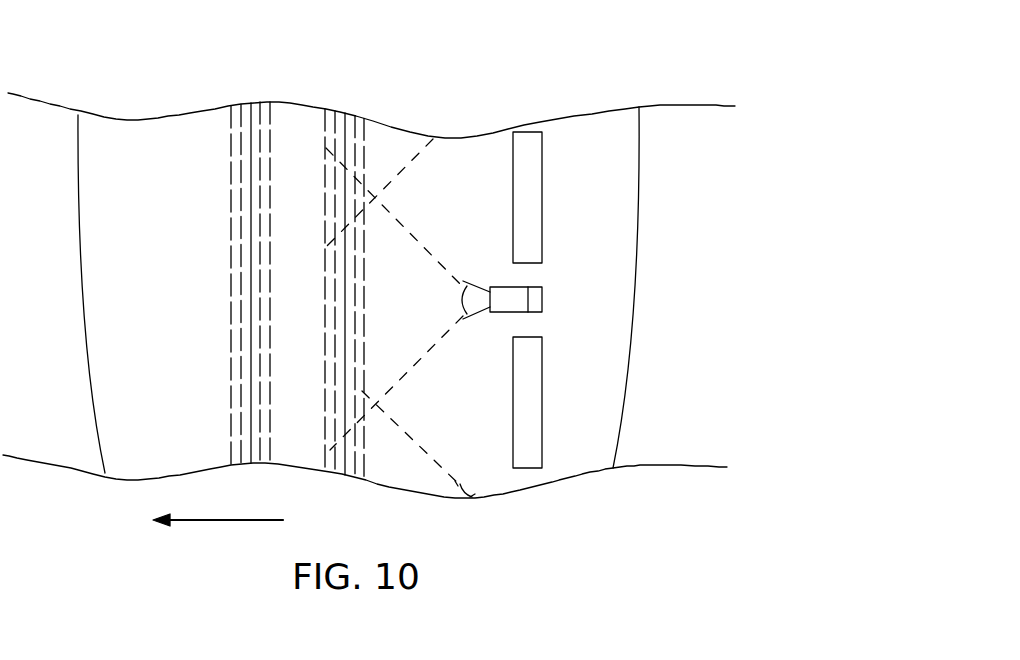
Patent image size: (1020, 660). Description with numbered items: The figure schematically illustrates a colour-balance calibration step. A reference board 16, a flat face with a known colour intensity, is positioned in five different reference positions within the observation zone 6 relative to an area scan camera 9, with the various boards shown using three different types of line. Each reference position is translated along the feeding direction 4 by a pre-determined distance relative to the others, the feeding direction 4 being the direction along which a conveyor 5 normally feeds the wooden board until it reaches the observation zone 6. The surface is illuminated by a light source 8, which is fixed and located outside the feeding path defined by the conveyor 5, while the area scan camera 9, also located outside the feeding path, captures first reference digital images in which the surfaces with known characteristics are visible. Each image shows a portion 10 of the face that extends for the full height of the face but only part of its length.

The feeding direction 4 is at (245, 520).
The conveyor 5 is at (573, 425).
The observation zone 6 is at (463, 95).
The light source 8 is at (528, 183).
The area scan camera 9 is at (516, 302).
The portion 10 is at (387, 282).
The reference board 16 is at (325, 187).